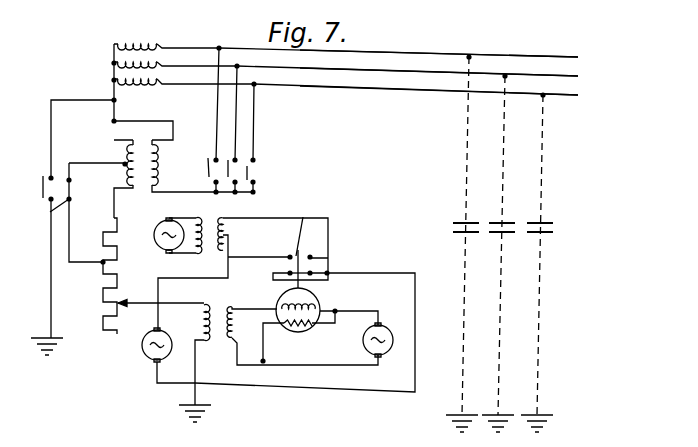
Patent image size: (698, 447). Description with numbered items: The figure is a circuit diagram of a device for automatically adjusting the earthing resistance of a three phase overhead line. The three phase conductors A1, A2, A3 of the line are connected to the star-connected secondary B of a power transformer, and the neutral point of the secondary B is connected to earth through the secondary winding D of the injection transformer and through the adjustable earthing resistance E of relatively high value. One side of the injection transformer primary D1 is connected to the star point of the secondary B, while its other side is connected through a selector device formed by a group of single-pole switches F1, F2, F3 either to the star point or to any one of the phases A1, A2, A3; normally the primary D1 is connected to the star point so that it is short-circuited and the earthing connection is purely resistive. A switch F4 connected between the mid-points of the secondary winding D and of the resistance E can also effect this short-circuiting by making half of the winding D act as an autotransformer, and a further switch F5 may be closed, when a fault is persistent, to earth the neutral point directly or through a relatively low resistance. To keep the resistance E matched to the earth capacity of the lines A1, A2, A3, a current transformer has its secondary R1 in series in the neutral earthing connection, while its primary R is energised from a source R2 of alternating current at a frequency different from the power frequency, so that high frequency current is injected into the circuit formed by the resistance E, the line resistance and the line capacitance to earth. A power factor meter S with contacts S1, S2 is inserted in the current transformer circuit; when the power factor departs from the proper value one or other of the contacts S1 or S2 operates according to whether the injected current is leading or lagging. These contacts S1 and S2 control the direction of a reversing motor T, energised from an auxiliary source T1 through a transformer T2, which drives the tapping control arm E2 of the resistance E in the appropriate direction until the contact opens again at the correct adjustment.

The star-connected secondary of power transformer B is at (138, 46).
The phase conductor A1 is at (385, 52).
The phase conductor A2 is at (428, 72).
The phase conductor A3 is at (452, 92).
The single-pole switch of selector device F1 is at (207, 157).
The single-pole switch of selector device F2 is at (232, 170).
The single-pole switch of selector device F3 is at (248, 172).
The short-circuiting switch F4 is at (50, 212).
The further switch F5 is at (42, 187).
The secondary winding of injection transformer D is at (125, 163).
The primary winding of injection transformer D1 is at (158, 167).
The reversing motor T is at (156, 347).
The auxiliary source T1 is at (158, 238).
The transformer T2 is at (218, 232).
The power factor meter S is at (296, 332).
The contact of power factor meter S1 is at (307, 230).
The contact of power factor meter S2 is at (312, 267).
The earthing resistance E is at (103, 290).
The tapping control arm E2 is at (143, 305).
The primary of current transformer R is at (238, 342).
The secondary of current transformer R1 is at (202, 328).
The source of alternating current R2 is at (393, 340).